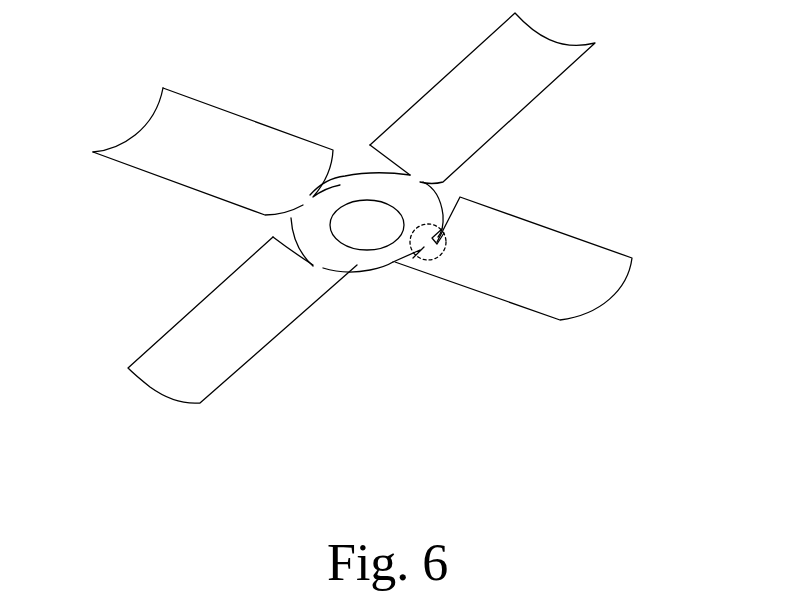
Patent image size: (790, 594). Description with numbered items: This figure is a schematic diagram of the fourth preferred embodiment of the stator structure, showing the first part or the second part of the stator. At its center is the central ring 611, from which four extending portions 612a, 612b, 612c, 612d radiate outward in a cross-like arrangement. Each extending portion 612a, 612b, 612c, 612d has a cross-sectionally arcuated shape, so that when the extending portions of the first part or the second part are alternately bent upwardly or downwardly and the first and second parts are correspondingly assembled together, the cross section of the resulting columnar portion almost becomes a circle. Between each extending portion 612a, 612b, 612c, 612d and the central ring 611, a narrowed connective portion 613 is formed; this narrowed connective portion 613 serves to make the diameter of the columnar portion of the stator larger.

The central ring 611 is at (305, 211).
The extending portion 612a is at (178, 163).
The extending portion 612b is at (195, 373).
The extending portion 612c is at (580, 303).
The extending portion 612d is at (530, 47).
The narrowed connective portion 613 is at (418, 254).